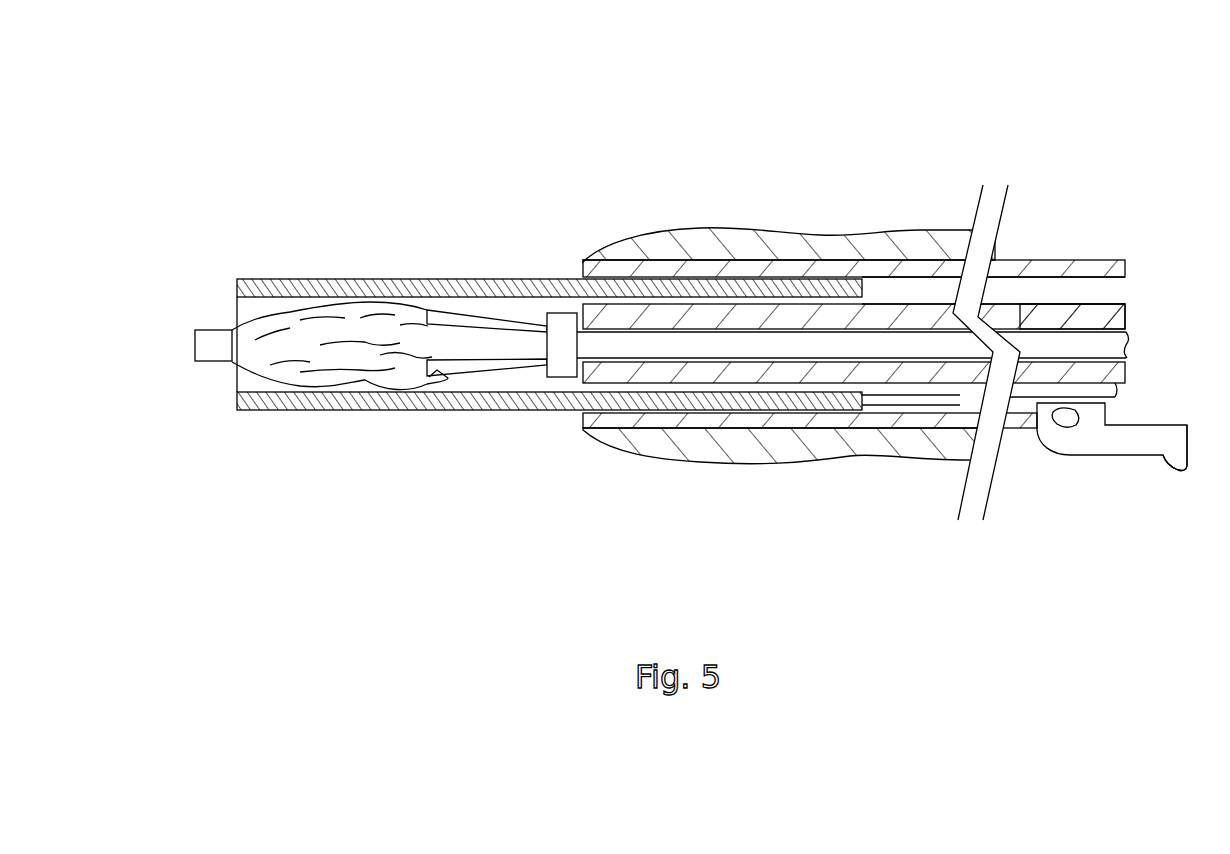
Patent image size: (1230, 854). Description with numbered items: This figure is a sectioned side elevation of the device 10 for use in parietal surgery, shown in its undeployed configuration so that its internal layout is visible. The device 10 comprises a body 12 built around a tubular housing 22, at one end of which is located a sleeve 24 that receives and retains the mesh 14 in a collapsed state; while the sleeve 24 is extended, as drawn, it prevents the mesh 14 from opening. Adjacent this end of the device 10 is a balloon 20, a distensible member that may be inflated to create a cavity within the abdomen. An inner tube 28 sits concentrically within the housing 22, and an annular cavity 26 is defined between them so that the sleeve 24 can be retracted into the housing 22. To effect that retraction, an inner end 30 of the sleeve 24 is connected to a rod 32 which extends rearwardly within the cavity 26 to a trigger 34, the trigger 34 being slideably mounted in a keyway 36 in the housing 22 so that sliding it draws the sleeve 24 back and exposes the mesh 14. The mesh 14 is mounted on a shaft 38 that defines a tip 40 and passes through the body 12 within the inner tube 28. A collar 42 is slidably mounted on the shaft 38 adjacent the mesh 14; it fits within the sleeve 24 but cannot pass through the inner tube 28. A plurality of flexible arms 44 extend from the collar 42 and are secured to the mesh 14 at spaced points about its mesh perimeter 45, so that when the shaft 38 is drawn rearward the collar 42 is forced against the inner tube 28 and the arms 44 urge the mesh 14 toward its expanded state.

The device for use in parietal surgery 10 is at (638, 172).
The body 12 is at (1065, 255).
The mesh 14 is at (361, 327).
The balloon 20 is at (803, 237).
The tubular housing 22 is at (703, 266).
The sleeve 24 is at (421, 290).
The annular cavity 26 is at (1005, 288).
The inner tube 28 is at (1112, 313).
The inner end 30 is at (863, 290).
The rod 32 is at (895, 398).
The trigger 34 is at (1165, 452).
The keyway 36 is at (1038, 432).
The shaft 38 is at (462, 352).
The tip 40 is at (207, 340).
The collar 42 is at (565, 323).
The arms 44 is at (487, 320).
The mesh perimeter 45 is at (420, 381).